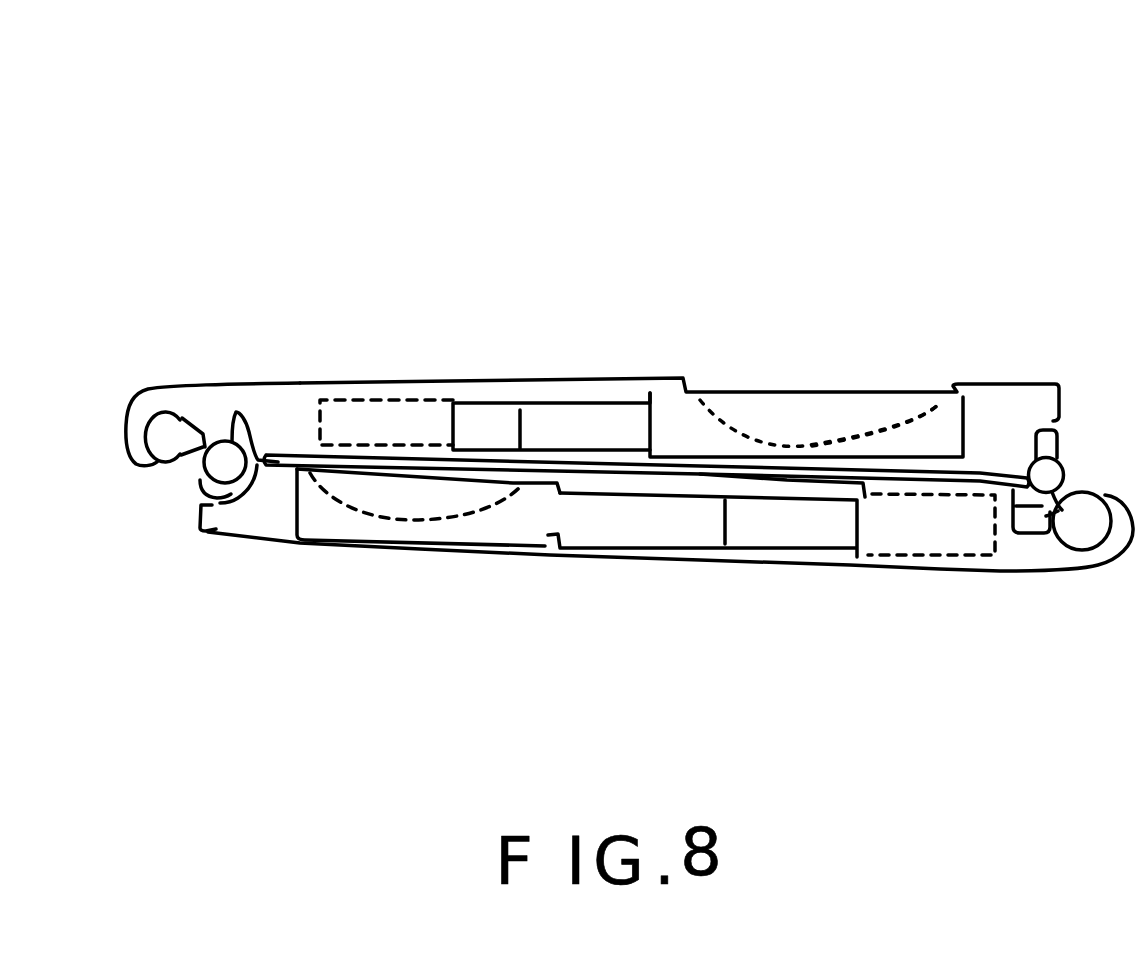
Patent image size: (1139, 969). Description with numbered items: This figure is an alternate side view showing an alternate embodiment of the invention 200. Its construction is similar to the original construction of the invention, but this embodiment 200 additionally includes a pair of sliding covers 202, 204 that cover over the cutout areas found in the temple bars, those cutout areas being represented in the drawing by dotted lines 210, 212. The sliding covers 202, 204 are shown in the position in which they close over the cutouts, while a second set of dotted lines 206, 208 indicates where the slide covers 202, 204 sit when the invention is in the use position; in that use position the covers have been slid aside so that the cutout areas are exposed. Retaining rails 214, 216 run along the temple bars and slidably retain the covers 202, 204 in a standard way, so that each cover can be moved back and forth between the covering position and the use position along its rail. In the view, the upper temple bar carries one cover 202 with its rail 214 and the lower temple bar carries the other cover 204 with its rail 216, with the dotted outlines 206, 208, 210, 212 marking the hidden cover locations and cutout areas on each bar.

The alternate embodiment of the invention 200 is at (1033, 213).
The sliding cover 202 is at (766, 409).
The sliding cover 204 is at (524, 518).
The dotted line 206 is at (371, 398).
The dotted line 208 is at (926, 553).
The dotted line (cutout area) 210 is at (840, 435).
The dotted line (cutout area) 212 is at (390, 518).
The retaining rail 214 is at (601, 458).
The retaining rail 216 is at (630, 484).